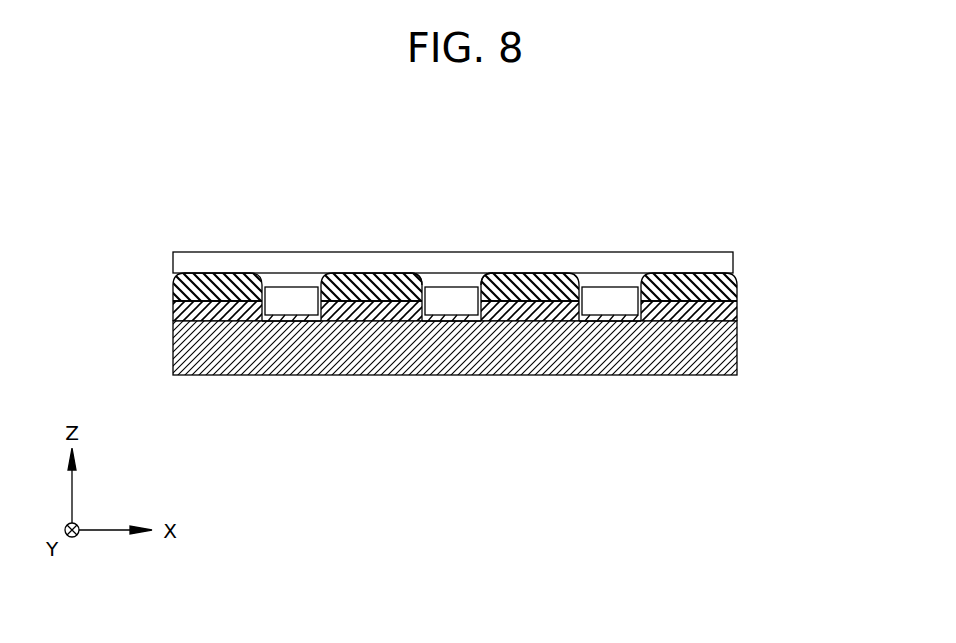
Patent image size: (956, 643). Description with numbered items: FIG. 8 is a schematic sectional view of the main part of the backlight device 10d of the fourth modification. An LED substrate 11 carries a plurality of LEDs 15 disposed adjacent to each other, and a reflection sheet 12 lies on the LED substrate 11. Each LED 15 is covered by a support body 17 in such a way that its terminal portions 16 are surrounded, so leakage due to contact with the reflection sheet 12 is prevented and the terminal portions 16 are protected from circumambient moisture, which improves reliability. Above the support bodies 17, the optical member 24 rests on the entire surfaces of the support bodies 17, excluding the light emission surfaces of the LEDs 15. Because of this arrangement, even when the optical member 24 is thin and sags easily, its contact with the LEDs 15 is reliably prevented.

The backlight device 10d is at (749, 171).
The LED substrate 11 is at (737, 350).
The reflection sheet 12 is at (362, 281).
The LED 15 is at (455, 290).
The terminal portion 16 is at (444, 322).
The support body 17 is at (421, 287).
The optical member 24 is at (734, 263).